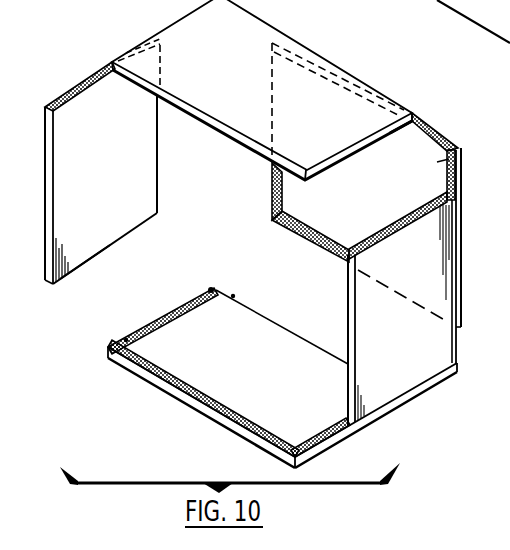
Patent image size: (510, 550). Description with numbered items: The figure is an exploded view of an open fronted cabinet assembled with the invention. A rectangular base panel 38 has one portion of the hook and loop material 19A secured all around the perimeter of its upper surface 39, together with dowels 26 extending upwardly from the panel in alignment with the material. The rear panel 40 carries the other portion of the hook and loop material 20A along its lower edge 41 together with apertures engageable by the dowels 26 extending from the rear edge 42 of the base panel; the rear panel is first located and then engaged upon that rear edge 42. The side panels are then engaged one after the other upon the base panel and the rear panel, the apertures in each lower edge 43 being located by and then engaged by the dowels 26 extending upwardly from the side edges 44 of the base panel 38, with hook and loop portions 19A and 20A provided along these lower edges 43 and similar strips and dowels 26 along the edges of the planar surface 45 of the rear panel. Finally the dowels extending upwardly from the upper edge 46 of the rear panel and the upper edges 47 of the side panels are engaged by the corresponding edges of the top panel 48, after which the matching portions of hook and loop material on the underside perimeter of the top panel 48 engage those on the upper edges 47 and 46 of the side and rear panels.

The base panel 38 is at (302, 439).
The top panel 48 is at (298, 59).
The lower edge 43 is at (100, 231).
The rear panel 40 is at (462, 158).
The lower edge 41 is at (340, 249).
The rear edge 42 is at (266, 318).
The upper surface 39 is at (218, 289).
The dowels 26 is at (125, 337).
The side edges 44 is at (154, 148).
The planar surface 45 is at (409, 137).
The upper edge 46 is at (444, 134).
The upper edges 47 is at (90, 77).
The hook and loop material portion 19A is at (158, 176).
The hook and loop material portion 20A is at (272, 192).